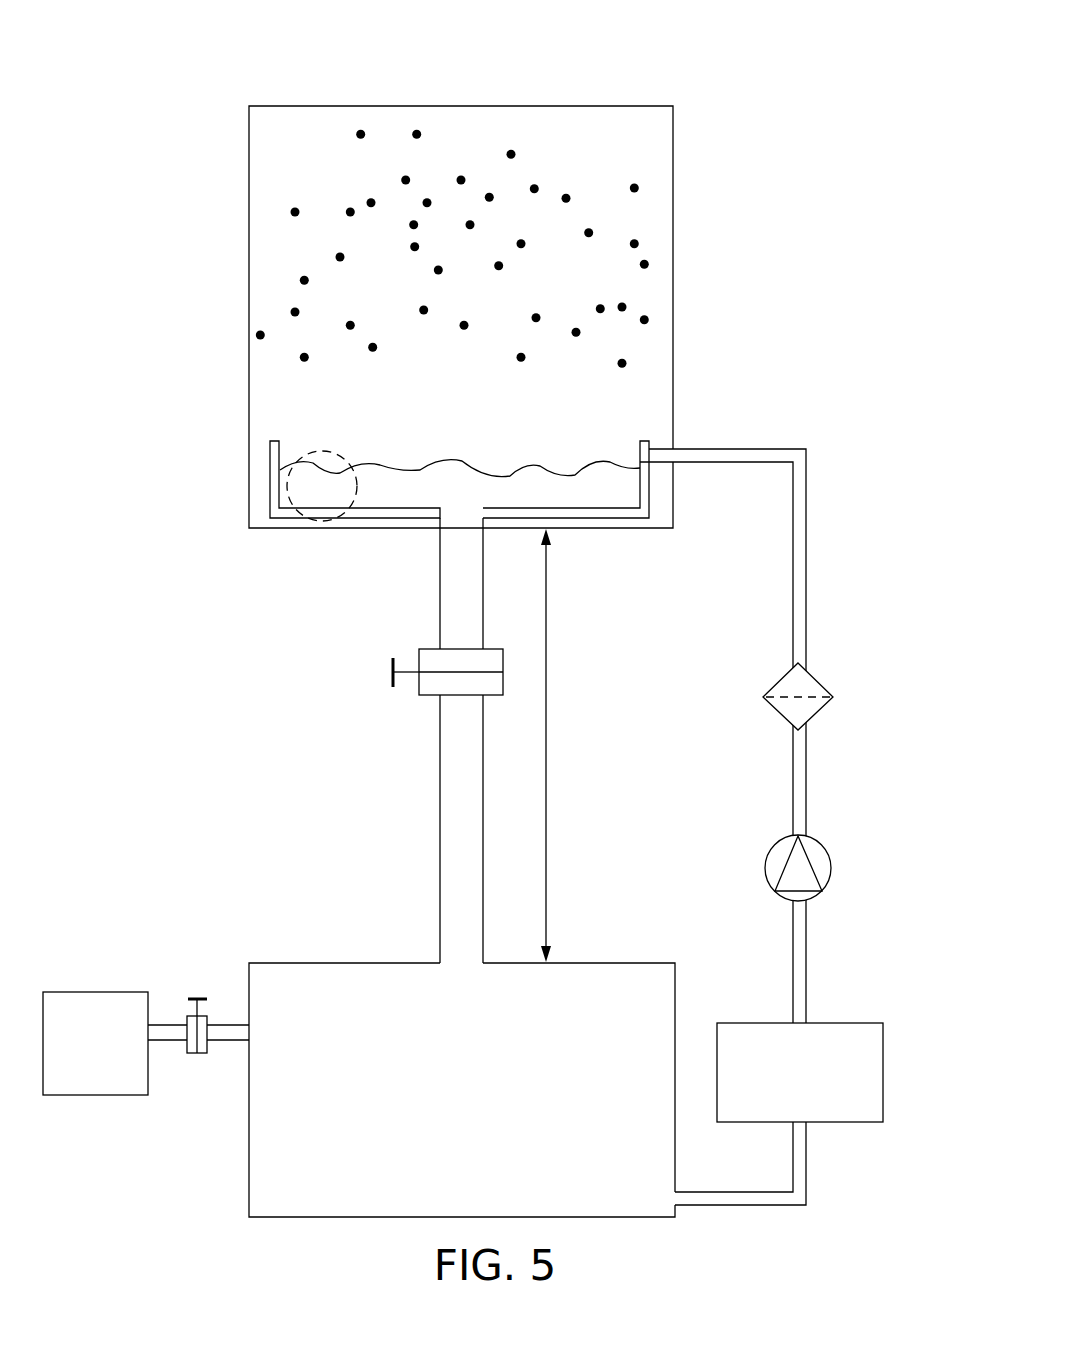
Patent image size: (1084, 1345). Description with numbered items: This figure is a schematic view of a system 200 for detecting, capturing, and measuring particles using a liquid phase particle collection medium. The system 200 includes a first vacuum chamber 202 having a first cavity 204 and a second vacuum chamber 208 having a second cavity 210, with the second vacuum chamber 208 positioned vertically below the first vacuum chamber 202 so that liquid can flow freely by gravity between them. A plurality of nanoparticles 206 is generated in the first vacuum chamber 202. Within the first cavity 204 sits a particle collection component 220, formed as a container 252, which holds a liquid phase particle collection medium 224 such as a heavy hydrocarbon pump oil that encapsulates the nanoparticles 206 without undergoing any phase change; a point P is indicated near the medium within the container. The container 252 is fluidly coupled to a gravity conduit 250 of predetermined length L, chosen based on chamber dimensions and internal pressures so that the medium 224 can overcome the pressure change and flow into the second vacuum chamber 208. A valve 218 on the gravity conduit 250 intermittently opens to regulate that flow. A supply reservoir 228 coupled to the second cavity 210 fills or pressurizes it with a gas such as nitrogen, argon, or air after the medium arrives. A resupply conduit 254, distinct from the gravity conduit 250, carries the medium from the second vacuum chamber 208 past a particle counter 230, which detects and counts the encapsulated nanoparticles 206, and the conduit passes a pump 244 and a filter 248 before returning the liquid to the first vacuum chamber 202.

The system 200 is at (466, 58).
The first vacuum chamber 202 is at (673, 172).
The first cavity 204 is at (600, 141).
The nanoparticles 206 is at (638, 244).
The second vacuum chamber 208 is at (250, 1145).
The second cavity 210 is at (468, 1092).
The valve 218 is at (393, 680).
The particle collection component 220 is at (383, 479).
The container 252 is at (270, 493).
The particle collection medium 224 is at (318, 465).
The point P is at (322, 521).
The supply reservoir 228 is at (146, 1043).
The particle counter 230 is at (883, 1084).
The pump 244 is at (830, 873).
The filter 248 is at (833, 697).
The gravity conduit 250 is at (440, 848).
The resupply conduit 254 is at (806, 1172).
The predetermined length L is at (546, 755).